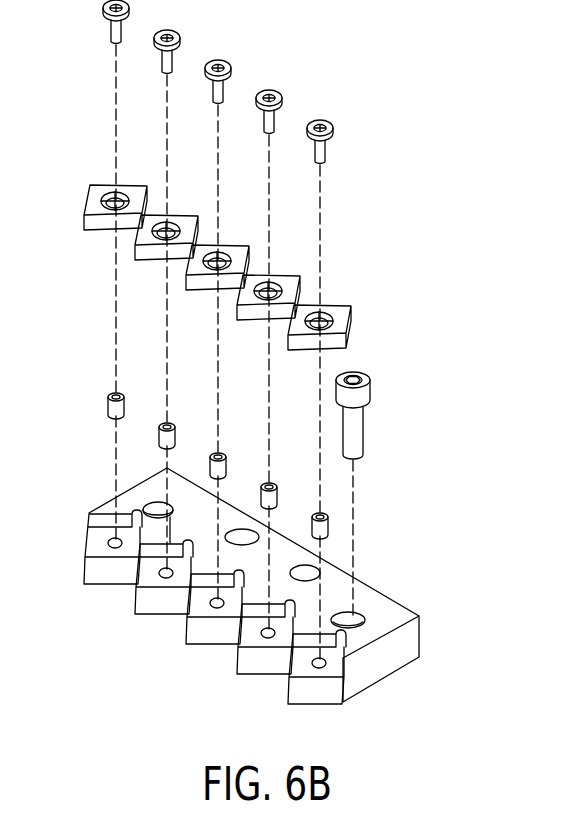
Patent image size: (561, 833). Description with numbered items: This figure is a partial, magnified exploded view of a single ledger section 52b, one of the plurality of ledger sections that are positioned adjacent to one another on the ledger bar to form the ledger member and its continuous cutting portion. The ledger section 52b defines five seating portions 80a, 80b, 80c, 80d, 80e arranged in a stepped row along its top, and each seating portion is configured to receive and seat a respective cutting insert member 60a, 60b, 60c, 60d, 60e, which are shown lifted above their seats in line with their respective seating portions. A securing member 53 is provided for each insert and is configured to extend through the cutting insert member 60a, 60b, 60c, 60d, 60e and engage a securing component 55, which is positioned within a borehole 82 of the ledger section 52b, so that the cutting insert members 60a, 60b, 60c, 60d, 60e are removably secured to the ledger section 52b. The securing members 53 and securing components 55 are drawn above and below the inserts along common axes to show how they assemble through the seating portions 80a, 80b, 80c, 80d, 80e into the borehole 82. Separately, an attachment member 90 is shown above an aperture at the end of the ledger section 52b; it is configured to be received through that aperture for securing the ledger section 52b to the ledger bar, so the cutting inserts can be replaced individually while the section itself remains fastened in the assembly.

The securing member 53 is at (323, 147).
The securing component 55 is at (322, 527).
The cutting insert member 60a is at (128, 189).
The cutting insert member 60b is at (128, 189).
The cutting insert member 60c is at (225, 241).
The cutting insert member 60d is at (276, 271).
The cutting insert member 60e is at (327, 301).
The attachment member 90 is at (352, 430).
The ledger section 52b is at (410, 640).
The seating portion 80a is at (98, 549).
The seating portion 80b is at (98, 549).
The seating portion 80c is at (201, 625).
The seating portion 80d is at (252, 655).
The seating portion 80e is at (303, 685).
The borehole 82 is at (327, 665).